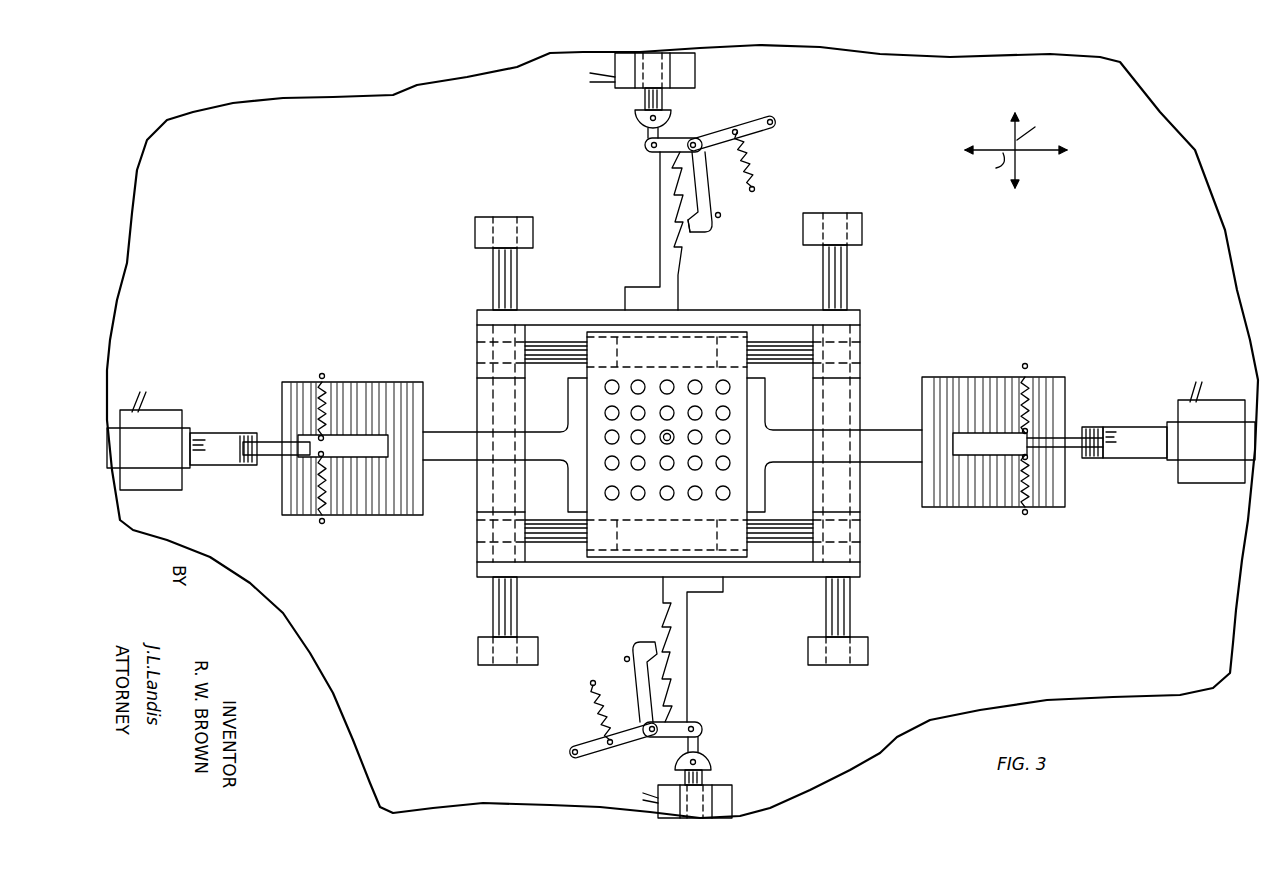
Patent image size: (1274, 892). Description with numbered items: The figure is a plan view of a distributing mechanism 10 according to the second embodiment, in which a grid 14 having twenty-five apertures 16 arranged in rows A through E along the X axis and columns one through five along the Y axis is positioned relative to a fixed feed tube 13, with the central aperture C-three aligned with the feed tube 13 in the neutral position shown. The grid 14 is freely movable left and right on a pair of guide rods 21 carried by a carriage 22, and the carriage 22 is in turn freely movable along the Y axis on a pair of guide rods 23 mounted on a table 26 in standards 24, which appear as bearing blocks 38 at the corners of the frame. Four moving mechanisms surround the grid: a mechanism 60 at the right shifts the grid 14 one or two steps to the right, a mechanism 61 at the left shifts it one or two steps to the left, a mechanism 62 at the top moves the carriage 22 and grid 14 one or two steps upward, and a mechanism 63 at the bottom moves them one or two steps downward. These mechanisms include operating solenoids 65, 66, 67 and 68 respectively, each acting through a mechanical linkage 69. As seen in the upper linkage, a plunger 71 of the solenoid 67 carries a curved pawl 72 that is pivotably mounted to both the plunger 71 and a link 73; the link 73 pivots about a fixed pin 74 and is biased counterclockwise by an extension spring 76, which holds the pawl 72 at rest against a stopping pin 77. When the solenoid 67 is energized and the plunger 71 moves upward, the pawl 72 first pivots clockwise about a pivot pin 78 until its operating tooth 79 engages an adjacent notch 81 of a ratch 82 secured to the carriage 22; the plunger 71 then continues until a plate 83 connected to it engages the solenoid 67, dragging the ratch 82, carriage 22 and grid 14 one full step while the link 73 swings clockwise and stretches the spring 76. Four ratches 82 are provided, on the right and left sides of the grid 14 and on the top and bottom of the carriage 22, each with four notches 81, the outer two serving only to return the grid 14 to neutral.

The positioning apparatus 10 is at (898, 120).
The feed tube 13 is at (677, 428).
The grid 14 is at (688, 332).
The apertures 16 is at (665, 496).
The guide rods 21 is at (776, 362).
The carriage 22 is at (757, 585).
The guide rods 23 is at (492, 270).
The standards 24 is at (475, 232).
The table 26 is at (1162, 117).
The bearing blocks 38 is at (485, 380).
The moving mechanism 60 is at (1179, 424).
The moving mechanism 61 is at (208, 428).
The moving mechanism 62 is at (676, 157).
The moving mechanism 63 is at (672, 738).
The operating solenoid 65 is at (1173, 427).
The operating solenoid 66 is at (187, 430).
The operating solenoid 67 is at (697, 72).
The operating solenoid 68 is at (730, 797).
The mechanical linkage 69 is at (645, 178).
The plunger 71 is at (663, 100).
The curved pawl 72 is at (706, 182).
The link 73 is at (745, 122).
The fixed pin 74 is at (775, 118).
The extension spring 76 is at (756, 155).
The stopping pin 77 is at (722, 216).
The pivot pin 78 is at (697, 137).
The operating tooth 79 is at (693, 235).
The notch 81 is at (672, 245).
The ratch 82 is at (660, 272).
The plate 83 is at (640, 118).